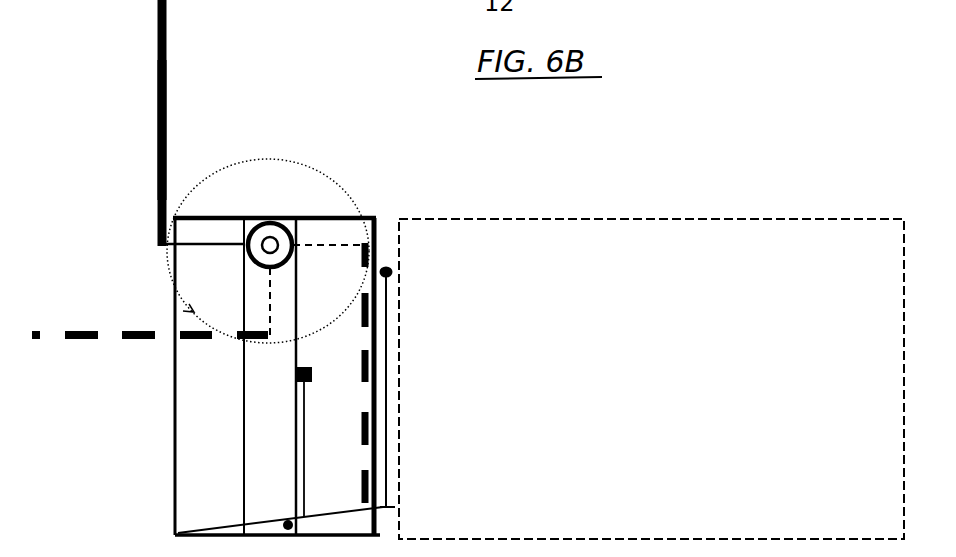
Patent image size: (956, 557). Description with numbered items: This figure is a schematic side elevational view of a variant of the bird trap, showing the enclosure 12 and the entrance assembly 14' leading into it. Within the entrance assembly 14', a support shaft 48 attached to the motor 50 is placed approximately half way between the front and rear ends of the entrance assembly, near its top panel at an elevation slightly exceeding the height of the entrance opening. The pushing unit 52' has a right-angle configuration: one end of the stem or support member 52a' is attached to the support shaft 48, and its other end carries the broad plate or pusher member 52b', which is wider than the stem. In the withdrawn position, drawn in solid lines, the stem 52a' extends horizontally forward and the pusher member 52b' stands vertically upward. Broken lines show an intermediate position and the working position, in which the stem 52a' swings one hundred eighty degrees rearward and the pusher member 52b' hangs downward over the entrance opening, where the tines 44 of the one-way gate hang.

The housing 12 is at (598, 213).
The entrance assembly 14' is at (297, 337).
The tine 44 is at (388, 320).
The support shaft 48 is at (278, 243).
The motor 50 is at (271, 243).
The pushing unit 52' is at (210, 123).
The stem or support member 52a' is at (206, 183).
The broad plate or pusher member 52b' is at (121, 130).